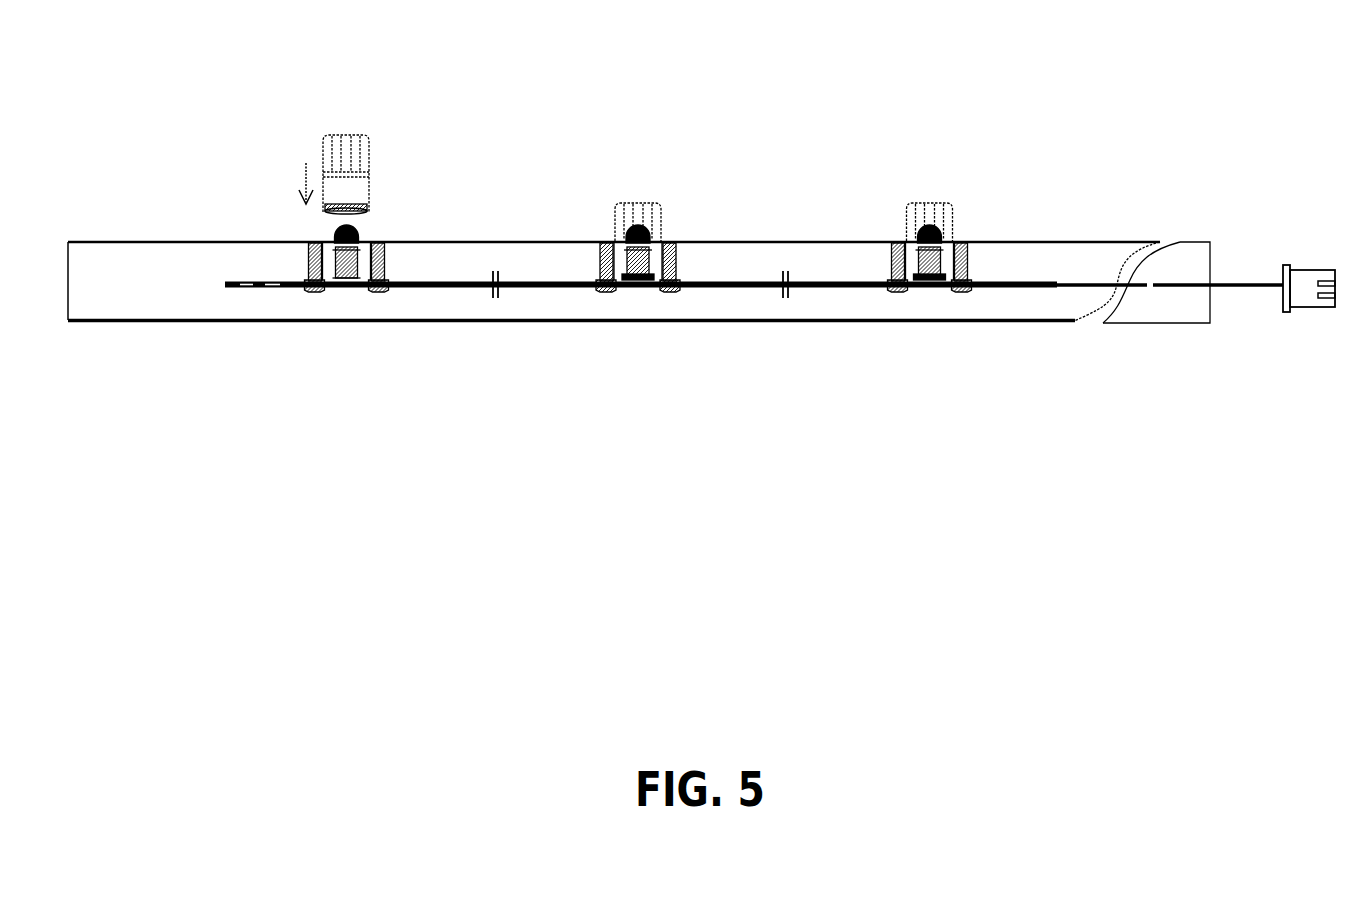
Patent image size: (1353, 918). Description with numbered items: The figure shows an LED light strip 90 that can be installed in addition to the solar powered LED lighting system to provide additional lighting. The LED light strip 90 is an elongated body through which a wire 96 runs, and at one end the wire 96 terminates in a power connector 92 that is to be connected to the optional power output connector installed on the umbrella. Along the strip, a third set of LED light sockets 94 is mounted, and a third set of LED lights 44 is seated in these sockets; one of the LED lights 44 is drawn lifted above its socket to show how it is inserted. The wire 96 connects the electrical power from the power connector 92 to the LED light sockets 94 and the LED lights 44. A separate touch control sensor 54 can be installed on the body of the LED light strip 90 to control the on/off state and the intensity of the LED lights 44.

The third set of LED lights 44 is at (335, 146).
The separate touch control sensor 54 is at (787, 242).
The LED light strip 90 is at (164, 251).
The power connector 92 is at (1308, 265).
The third set of LED light sockets 94 is at (350, 292).
The wire 96 is at (540, 281).